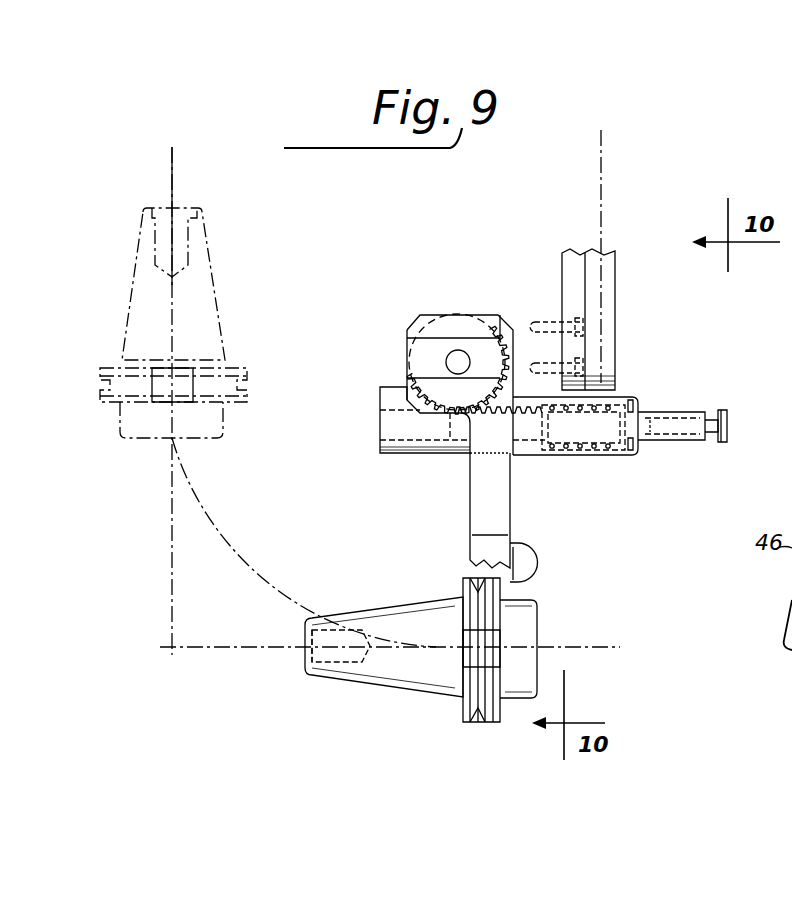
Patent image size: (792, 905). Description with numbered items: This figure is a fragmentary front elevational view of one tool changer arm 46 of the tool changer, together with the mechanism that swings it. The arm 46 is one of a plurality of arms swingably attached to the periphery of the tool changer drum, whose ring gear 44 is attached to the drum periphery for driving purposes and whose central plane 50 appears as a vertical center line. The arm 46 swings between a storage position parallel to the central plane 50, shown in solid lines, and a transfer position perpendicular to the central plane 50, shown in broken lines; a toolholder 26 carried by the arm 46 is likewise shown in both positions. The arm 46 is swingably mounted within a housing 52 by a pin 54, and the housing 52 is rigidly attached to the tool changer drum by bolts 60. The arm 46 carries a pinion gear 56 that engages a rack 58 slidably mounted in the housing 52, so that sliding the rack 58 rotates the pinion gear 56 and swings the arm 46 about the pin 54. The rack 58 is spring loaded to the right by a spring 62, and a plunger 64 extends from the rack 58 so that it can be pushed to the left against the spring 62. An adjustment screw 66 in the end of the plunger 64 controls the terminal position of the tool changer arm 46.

The toolholder 26 is at (207, 330).
The ring gear 44 is at (612, 376).
The tool changer arm 46 is at (482, 505).
The central plane 50 is at (602, 168).
The housing 52 is at (413, 317).
The pin 54 is at (460, 358).
The pinion gear 56 is at (498, 335).
The rack 58 is at (523, 413).
The bolts 60 is at (590, 358).
The spring 62 is at (595, 457).
The plunger 64 is at (678, 408).
The adjustment screw 66 is at (727, 424).